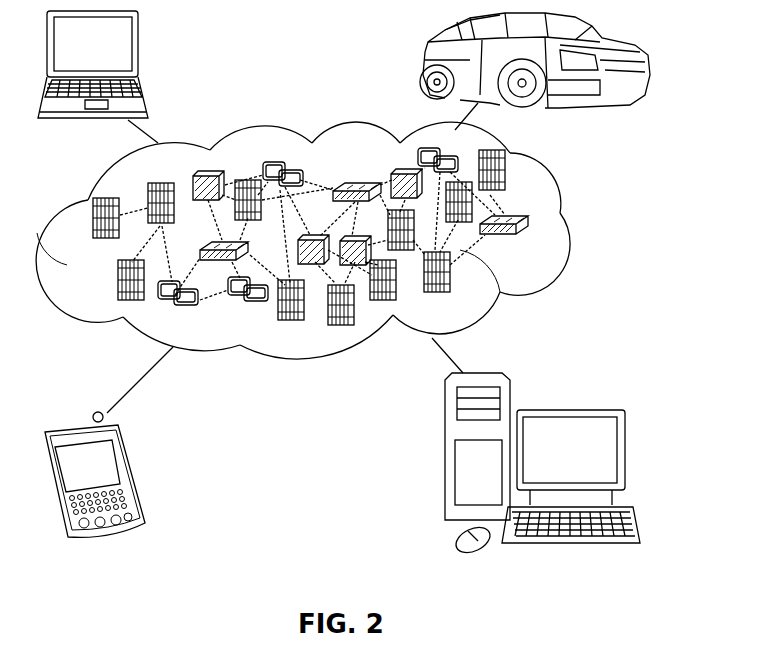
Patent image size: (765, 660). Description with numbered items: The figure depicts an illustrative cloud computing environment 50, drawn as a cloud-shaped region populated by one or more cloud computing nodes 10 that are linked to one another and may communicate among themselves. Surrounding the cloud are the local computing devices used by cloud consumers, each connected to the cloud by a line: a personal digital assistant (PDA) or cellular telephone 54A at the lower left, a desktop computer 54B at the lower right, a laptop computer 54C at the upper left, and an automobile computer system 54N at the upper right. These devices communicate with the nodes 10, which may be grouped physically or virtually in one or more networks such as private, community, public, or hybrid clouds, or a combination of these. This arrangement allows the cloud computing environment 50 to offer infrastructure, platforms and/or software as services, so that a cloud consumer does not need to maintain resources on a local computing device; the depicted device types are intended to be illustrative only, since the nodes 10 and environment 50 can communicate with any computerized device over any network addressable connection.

The cloud computing nodes 10 is at (530, 245).
The cloud computing environment 50 is at (567, 228).
The personal digital assistant (PDA) or cellular telephone 54A is at (137, 470).
The desktop computer 54B is at (567, 410).
The laptop computer 54C is at (138, 45).
The automobile computer system 54N is at (422, 60).